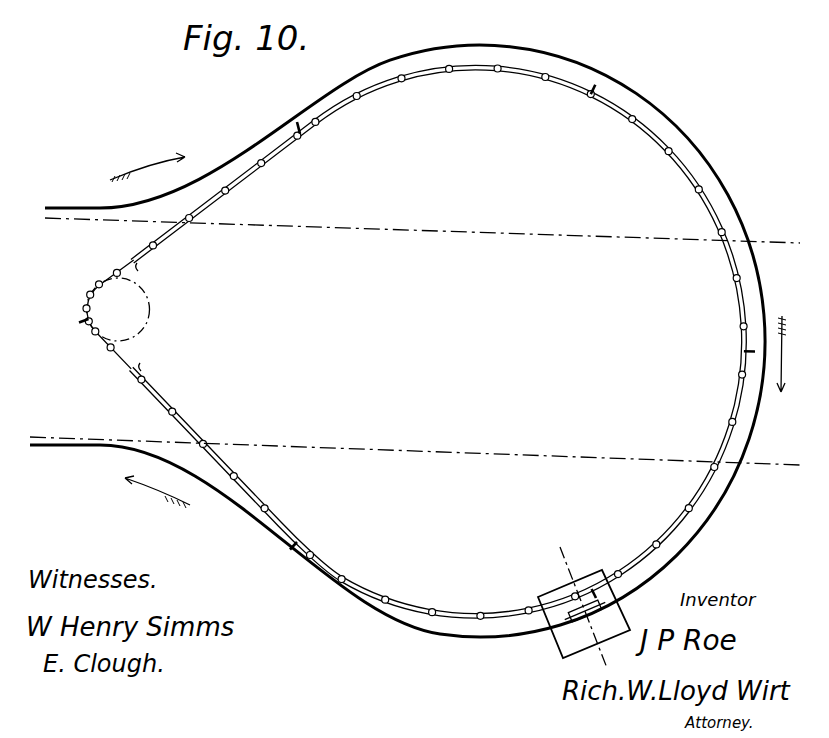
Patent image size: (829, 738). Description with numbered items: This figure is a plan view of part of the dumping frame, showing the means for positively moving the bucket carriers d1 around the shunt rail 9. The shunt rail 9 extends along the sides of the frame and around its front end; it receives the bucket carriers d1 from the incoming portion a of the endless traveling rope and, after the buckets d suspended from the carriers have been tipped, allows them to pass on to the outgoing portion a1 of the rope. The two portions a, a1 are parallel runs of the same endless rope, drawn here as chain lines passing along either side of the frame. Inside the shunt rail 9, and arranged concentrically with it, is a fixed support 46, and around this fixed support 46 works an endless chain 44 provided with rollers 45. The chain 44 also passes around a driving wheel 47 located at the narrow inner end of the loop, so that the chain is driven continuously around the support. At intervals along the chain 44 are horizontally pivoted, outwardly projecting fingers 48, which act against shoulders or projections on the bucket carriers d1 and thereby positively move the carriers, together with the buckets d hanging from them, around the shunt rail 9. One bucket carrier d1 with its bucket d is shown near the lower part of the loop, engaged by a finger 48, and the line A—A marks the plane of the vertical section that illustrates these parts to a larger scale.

The shunt rail 9 is at (700, 154).
The endless chain 44 is at (128, 368).
The rollers 45 is at (386, 592).
The fixed support 46 is at (263, 169).
The driving wheel 47 is at (150, 308).
The fingers 48 is at (598, 94).
The incoming portion of the endless rope a is at (71, 219).
The outgoing portion of the endless rope a1 is at (43, 437).
The section line A is at (584, 602).
The buckets d is at (629, 624).
The bucket carriers d1 is at (556, 636).